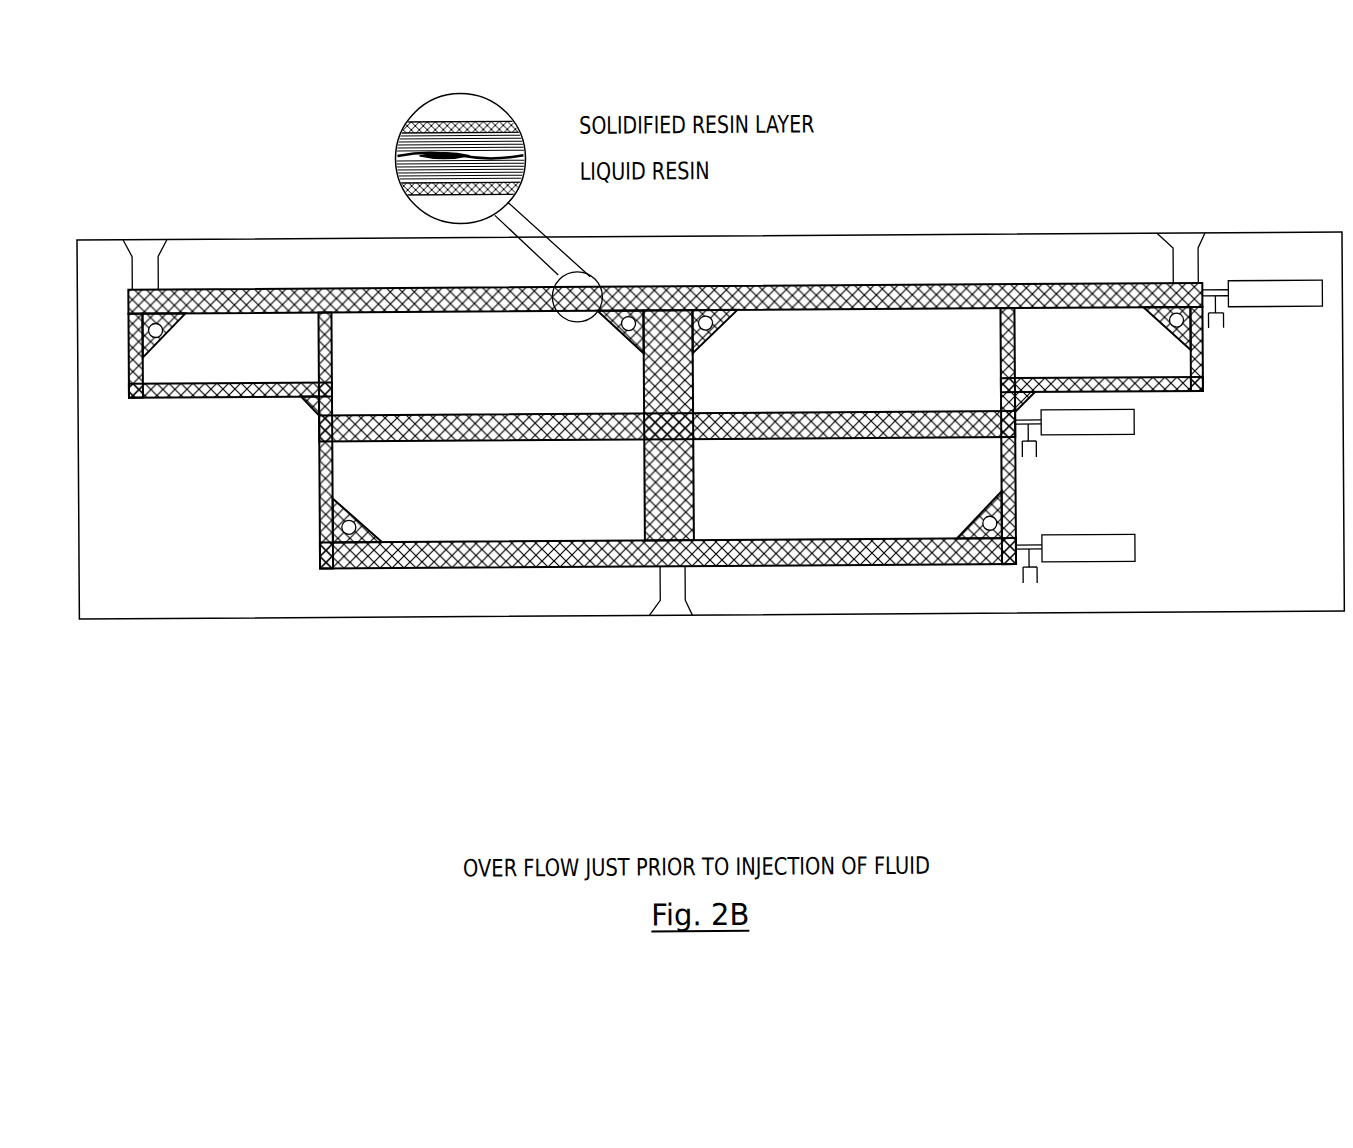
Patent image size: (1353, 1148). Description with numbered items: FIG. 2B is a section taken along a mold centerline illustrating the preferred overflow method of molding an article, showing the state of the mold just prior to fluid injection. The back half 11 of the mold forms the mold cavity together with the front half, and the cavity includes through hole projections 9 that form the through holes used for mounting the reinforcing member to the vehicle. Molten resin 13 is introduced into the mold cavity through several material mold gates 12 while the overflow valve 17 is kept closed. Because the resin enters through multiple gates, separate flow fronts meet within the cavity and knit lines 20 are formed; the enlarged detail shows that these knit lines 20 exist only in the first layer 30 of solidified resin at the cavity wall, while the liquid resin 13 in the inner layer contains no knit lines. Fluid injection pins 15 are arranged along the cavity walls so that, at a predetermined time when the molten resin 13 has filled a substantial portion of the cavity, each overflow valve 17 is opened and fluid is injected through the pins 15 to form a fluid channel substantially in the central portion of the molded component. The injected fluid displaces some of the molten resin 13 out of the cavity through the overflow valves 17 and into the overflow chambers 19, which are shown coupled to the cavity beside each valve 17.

The through hole projection 9 is at (162, 340).
The back half of the mold 11 is at (469, 444).
The gate 12 is at (1183, 290).
The molten resin 13 is at (527, 155).
The fluid injection pin 15 is at (320, 556).
The overflow valve 17 is at (1219, 336).
The overflow chamber 19 is at (1275, 316).
The knit line 20 is at (450, 123).
The first layer of solidified resin 30 is at (520, 126).